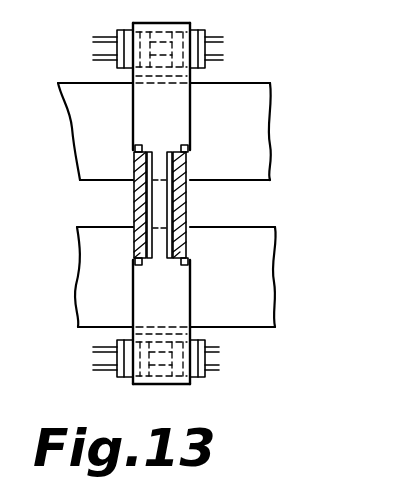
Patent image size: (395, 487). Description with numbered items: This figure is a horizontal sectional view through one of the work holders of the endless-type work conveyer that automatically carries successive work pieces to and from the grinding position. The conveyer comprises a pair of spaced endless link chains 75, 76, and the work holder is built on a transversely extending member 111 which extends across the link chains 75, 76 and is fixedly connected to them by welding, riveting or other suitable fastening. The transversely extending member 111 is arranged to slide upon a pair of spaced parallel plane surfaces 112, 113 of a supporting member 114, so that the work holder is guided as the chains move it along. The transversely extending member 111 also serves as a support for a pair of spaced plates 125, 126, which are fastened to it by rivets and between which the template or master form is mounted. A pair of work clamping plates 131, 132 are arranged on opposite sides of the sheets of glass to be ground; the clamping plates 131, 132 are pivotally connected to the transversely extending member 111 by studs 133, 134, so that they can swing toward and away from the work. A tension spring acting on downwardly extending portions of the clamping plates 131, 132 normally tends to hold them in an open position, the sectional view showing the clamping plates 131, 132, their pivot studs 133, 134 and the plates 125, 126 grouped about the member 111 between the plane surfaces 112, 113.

The endless link chain 75 is at (210, 41).
The endless link chain 76 is at (213, 370).
The transversely extending member 111 is at (173, 306).
The plane surface 112 is at (262, 125).
The plane surface 113 is at (260, 288).
The supporting member 114 is at (256, 82).
The plate 125 is at (148, 230).
The plate 126 is at (173, 214).
The work clamping plate 131 is at (133, 198).
The work clamping plate 132 is at (187, 198).
The stud 133 is at (136, 147).
The stud 134 is at (187, 147).